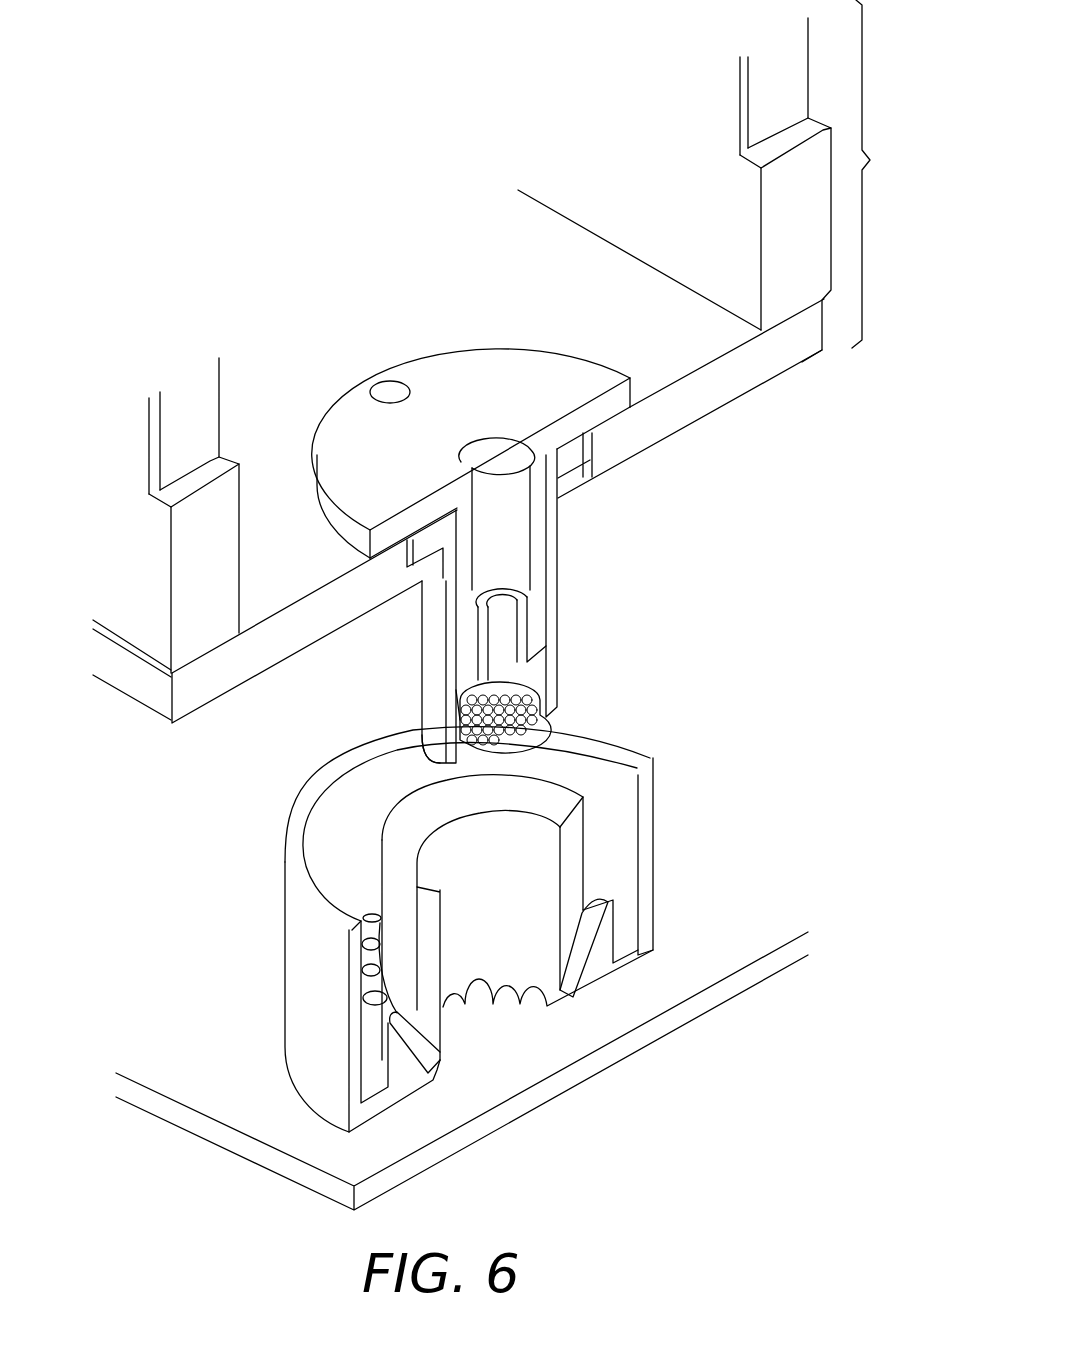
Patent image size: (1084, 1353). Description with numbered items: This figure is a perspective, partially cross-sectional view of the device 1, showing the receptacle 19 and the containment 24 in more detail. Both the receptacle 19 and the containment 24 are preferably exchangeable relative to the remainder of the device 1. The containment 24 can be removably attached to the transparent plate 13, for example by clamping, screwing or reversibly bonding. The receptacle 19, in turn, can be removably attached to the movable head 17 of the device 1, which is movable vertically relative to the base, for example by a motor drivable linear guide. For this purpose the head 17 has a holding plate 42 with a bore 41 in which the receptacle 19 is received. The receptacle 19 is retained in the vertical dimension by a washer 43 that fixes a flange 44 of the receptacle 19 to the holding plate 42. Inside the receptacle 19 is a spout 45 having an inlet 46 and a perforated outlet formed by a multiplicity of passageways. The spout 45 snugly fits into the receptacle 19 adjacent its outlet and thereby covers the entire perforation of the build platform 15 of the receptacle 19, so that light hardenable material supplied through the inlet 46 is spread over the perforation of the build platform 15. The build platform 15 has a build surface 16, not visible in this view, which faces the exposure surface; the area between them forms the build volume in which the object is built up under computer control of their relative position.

The device 1 is at (295, 215).
The transparent plate 13 is at (712, 997).
The build platform 15 is at (430, 765).
The build surface 16 is at (485, 740).
The movable head 17 is at (827, 181).
The receptacle 19 is at (555, 608).
The containment 24 is at (655, 850).
The bore 41 is at (562, 500).
The holding plate 42 is at (763, 362).
The washer 43 is at (462, 383).
The flange 44 is at (565, 460).
The spout 45 is at (460, 718).
The inlet 46 is at (478, 625).